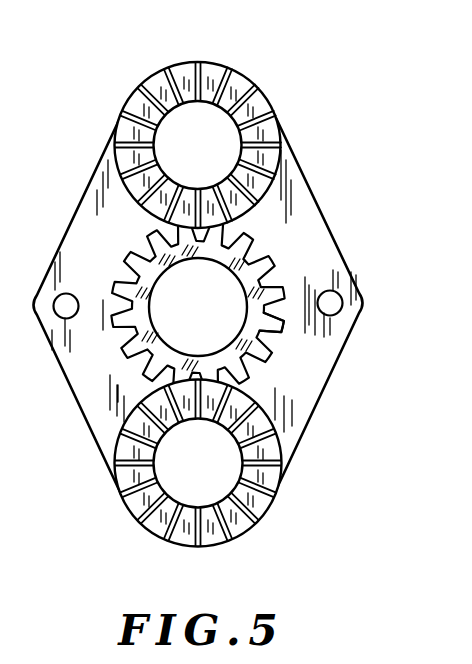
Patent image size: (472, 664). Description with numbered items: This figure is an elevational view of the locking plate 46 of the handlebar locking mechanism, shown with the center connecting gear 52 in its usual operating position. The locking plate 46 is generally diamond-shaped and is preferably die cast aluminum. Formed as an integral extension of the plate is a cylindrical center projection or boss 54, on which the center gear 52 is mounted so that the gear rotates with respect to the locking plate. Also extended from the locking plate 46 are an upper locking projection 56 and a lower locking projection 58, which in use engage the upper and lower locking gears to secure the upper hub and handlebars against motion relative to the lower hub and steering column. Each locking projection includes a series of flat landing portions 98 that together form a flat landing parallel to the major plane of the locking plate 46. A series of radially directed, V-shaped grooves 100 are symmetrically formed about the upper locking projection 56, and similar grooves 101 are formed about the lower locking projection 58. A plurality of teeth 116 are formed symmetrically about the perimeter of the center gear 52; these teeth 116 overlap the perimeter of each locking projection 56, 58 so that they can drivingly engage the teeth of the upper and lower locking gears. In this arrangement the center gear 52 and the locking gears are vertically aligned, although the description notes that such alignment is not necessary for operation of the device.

The locking plate 46 is at (310, 208).
The center connecting gear 52 is at (218, 306).
The center projection 54 is at (182, 300).
The upper locking projection 56 is at (198, 121).
The lower locking projection 58 is at (196, 466).
The flat landing portions 98 is at (240, 78).
The V-shaped grooves 100 is at (199, 63).
The grooves 101 is at (260, 522).
The teeth 116 is at (279, 325).